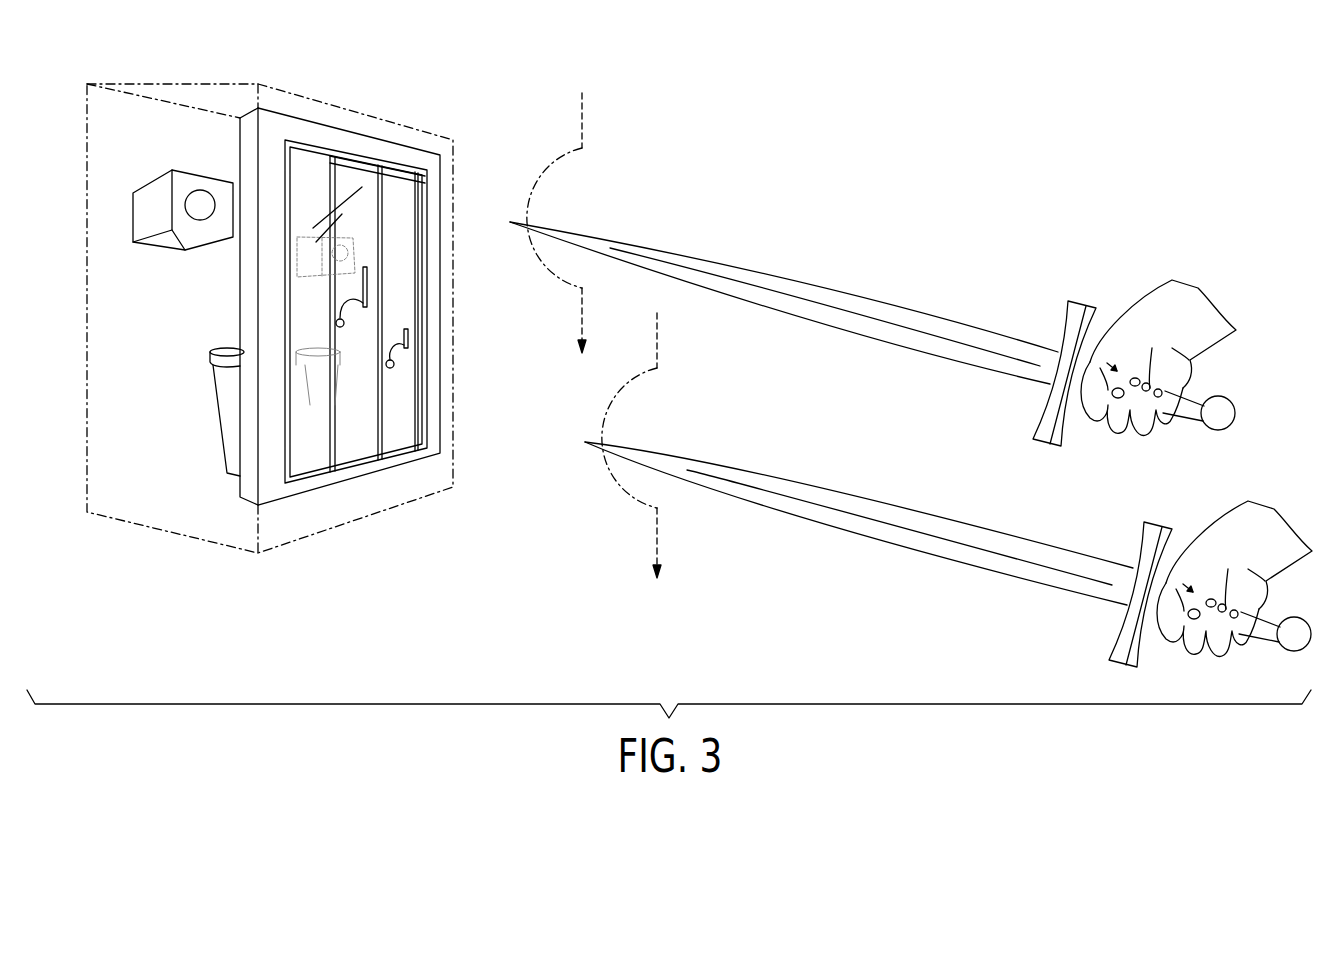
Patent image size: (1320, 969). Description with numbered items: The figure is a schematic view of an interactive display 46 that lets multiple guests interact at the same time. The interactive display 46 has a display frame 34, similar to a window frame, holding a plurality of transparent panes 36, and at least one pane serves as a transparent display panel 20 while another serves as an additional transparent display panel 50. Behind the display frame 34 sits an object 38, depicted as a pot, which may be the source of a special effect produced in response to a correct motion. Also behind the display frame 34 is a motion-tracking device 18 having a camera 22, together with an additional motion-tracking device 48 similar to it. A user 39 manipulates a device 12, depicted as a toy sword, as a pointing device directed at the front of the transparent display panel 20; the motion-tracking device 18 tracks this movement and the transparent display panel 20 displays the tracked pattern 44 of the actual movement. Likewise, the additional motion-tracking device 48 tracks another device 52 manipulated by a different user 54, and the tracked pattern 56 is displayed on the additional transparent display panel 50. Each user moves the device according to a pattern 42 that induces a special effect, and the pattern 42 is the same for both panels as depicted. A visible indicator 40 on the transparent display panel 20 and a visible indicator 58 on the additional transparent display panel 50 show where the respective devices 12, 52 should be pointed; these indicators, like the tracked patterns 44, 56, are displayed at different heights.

The device 12 is at (858, 305).
The motion-tracking device 18 is at (190, 193).
The transparent display panel 20 is at (345, 445).
The camera 22 is at (208, 188).
The display frame 34 is at (412, 157).
The transparent pane 36 is at (363, 450).
The object 38 is at (212, 362).
The user 39 is at (1163, 318).
The visible indicator 40 is at (336, 323).
The pattern 42 is at (584, 130).
The tracked pattern 44 is at (360, 290).
The interactive display 46 is at (417, 77).
The additional motion-tracking device 48 is at (310, 237).
The additional transparent display panel 50 is at (405, 421).
The device 52 is at (932, 525).
The user 54 is at (1238, 537).
The tracked pattern 56 is at (432, 345).
The visible indicator 58 is at (393, 367).